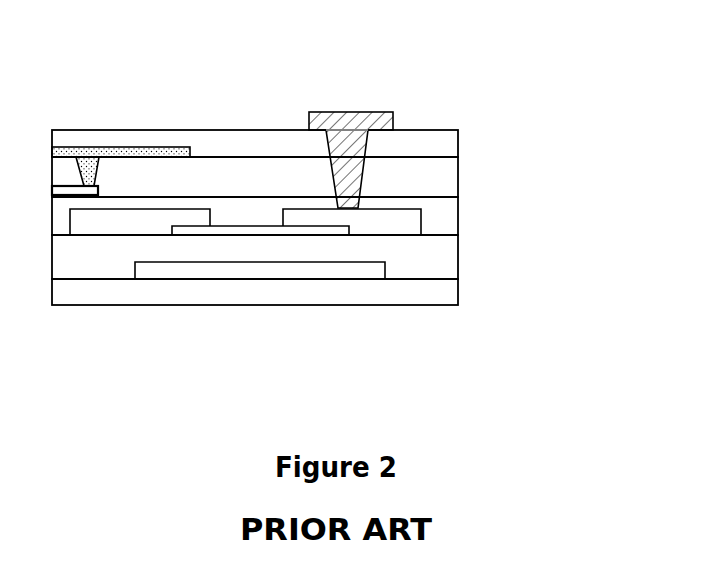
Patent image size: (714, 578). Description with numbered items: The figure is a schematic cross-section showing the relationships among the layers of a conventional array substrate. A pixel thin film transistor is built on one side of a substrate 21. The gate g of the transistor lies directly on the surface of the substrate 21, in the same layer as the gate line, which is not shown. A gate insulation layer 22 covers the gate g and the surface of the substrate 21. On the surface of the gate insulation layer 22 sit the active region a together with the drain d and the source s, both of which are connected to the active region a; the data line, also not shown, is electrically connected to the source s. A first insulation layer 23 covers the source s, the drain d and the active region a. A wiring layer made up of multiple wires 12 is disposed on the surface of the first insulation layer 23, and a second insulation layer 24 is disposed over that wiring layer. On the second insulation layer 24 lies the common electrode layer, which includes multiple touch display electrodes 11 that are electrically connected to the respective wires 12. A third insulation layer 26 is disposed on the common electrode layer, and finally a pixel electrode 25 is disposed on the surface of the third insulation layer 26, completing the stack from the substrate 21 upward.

The touch display electrode 11 is at (168, 146).
The wire 12 is at (98, 195).
The substrate 21 is at (188, 292).
The gate insulation layer 22 is at (448, 258).
The first insulation layer 23 is at (438, 218).
The second insulation layer 24 is at (433, 183).
The pixel electrode 25 is at (385, 113).
The third insulation layer 26 is at (277, 130).
The source s is at (110, 218).
The drain d is at (395, 221).
The active region a is at (318, 235).
The gate g is at (263, 269).